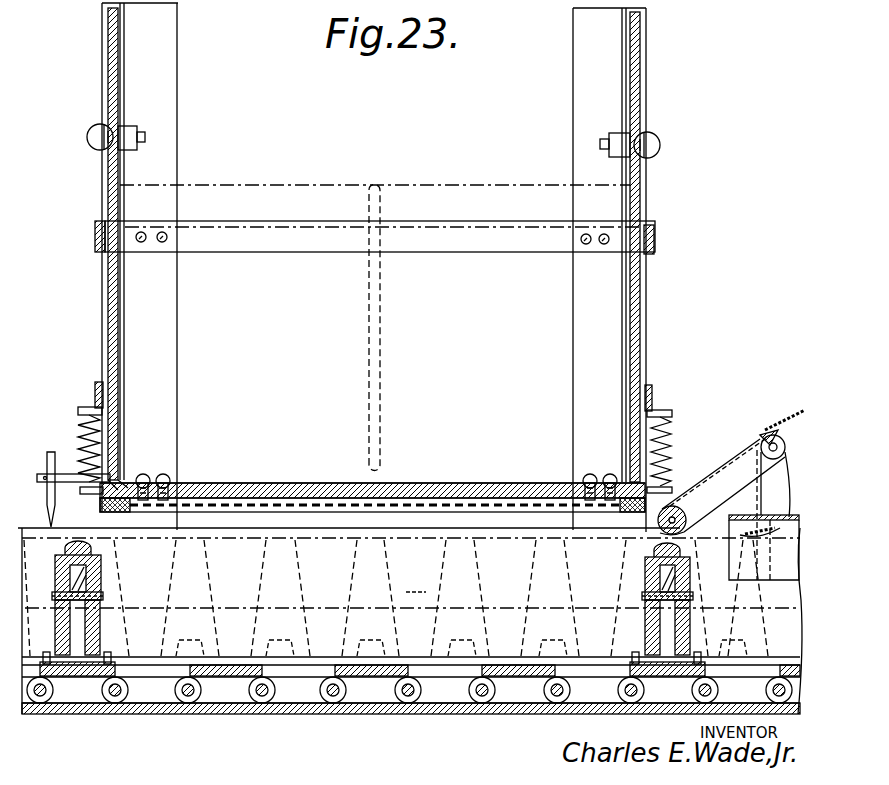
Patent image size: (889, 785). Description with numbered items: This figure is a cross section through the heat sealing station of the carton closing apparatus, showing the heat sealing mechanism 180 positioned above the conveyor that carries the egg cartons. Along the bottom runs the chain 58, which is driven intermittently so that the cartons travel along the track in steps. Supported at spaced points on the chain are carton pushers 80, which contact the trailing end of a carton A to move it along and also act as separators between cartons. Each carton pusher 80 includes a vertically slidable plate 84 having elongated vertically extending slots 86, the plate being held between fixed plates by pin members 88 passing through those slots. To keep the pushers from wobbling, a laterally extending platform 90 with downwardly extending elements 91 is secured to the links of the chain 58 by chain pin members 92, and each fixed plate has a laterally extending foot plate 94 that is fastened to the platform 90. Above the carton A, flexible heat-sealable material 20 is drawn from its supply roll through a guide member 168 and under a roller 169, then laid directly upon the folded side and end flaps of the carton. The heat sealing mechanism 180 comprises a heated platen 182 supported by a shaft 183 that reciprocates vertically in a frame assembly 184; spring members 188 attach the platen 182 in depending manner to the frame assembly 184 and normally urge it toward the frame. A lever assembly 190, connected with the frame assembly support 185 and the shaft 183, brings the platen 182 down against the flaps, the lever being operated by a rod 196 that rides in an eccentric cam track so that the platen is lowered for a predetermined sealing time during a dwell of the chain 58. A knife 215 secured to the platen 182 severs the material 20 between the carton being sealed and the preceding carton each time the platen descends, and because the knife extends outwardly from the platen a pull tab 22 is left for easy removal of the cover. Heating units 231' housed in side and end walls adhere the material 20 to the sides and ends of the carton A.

The frame assembly support 185 is at (170, 103).
The shaft 183 is at (110, 298).
The heat sealing mechanism 180 is at (657, 188).
The frame assembly 184 is at (126, 325).
The lever assembly 190 is at (108, 118).
The rod 196 is at (378, 380).
The platen 182 is at (213, 488).
The heating units 231' is at (372, 481).
The spring members 188 is at (86, 420).
The knife 215 is at (47, 462).
The pull tab 22 is at (75, 528).
The carton A is at (411, 597).
The carton pusher 80 is at (56, 563).
The pin members 88 is at (101, 592).
The slots 86 is at (77, 628).
The slidable plate 84 is at (645, 637).
The foot plate 94 is at (115, 660).
The platform 90 is at (365, 678).
The downwardly extending elements 91 is at (388, 698).
The chain pin members 92 is at (410, 697).
The chain 58 is at (305, 700).
The roller 169 is at (683, 507).
The heat-sealable material 20 is at (746, 456).
The guide member 168 is at (766, 430).